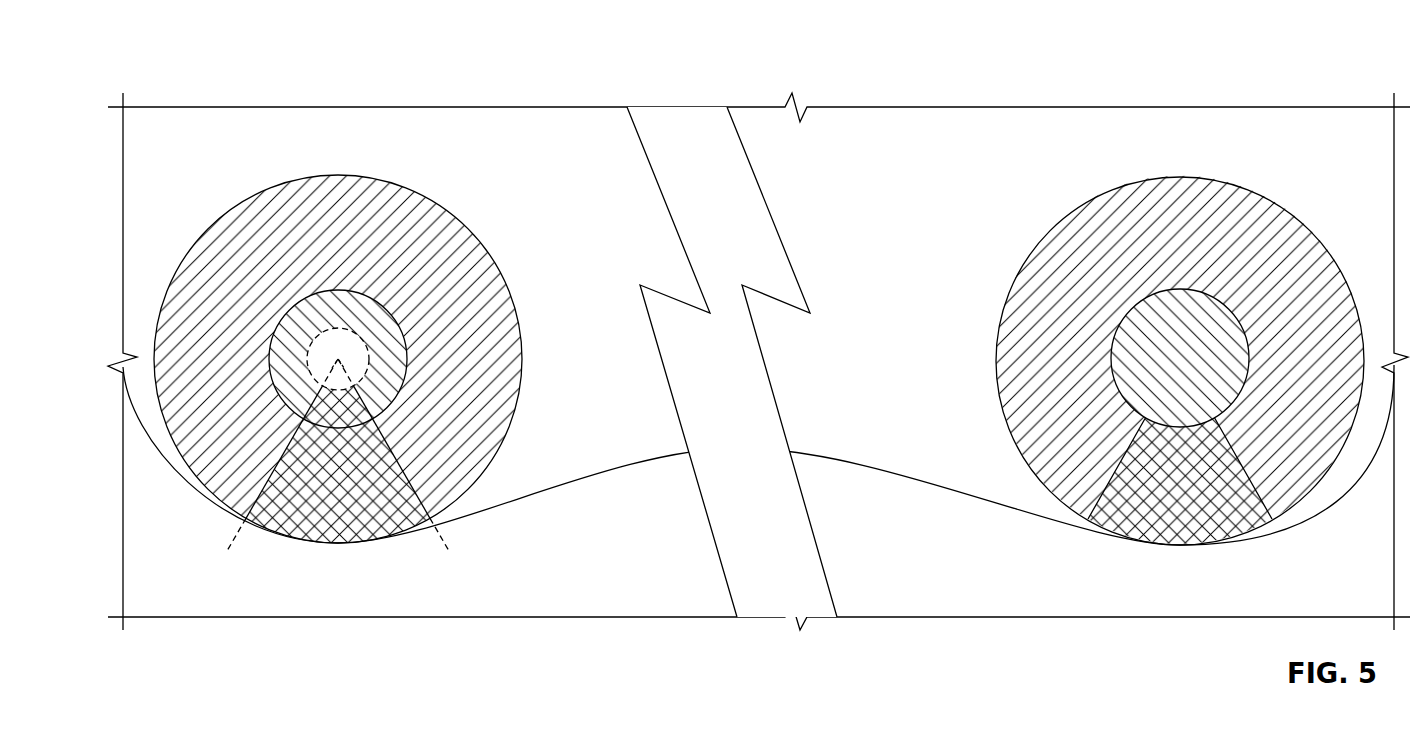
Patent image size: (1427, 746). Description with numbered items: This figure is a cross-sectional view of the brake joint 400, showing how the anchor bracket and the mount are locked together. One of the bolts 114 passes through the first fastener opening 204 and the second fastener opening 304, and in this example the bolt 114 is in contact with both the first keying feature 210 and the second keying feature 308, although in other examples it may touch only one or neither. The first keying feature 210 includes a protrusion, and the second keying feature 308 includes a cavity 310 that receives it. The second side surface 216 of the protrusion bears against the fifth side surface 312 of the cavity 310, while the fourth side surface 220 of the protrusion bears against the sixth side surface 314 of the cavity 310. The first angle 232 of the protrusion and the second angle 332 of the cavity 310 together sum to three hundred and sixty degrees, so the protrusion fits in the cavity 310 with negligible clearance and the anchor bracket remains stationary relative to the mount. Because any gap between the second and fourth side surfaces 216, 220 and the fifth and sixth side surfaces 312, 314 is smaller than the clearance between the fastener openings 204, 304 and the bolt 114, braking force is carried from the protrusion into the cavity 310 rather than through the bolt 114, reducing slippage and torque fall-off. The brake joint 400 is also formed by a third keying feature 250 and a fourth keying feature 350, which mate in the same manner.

The brake joint 400 is at (1300, 68).
The bolt 114 is at (300, 327).
The first fastener opening 204 is at (338, 359).
The second fastener opening 304 is at (425, 280).
The second angle 332 is at (367, 347).
The second side surface 216 is at (262, 455).
The fifth side surface 312 is at (282, 462).
The fourth side surface 220 is at (418, 455).
The sixth side surface 314 is at (447, 445).
The first angle 232 is at (342, 381).
The first keying feature 210 is at (333, 552).
The second keying feature 308 is at (368, 497).
The cavity 310 is at (376, 552).
The third keying feature 250 is at (1180, 392).
The fourth keying feature 350 is at (1218, 556).